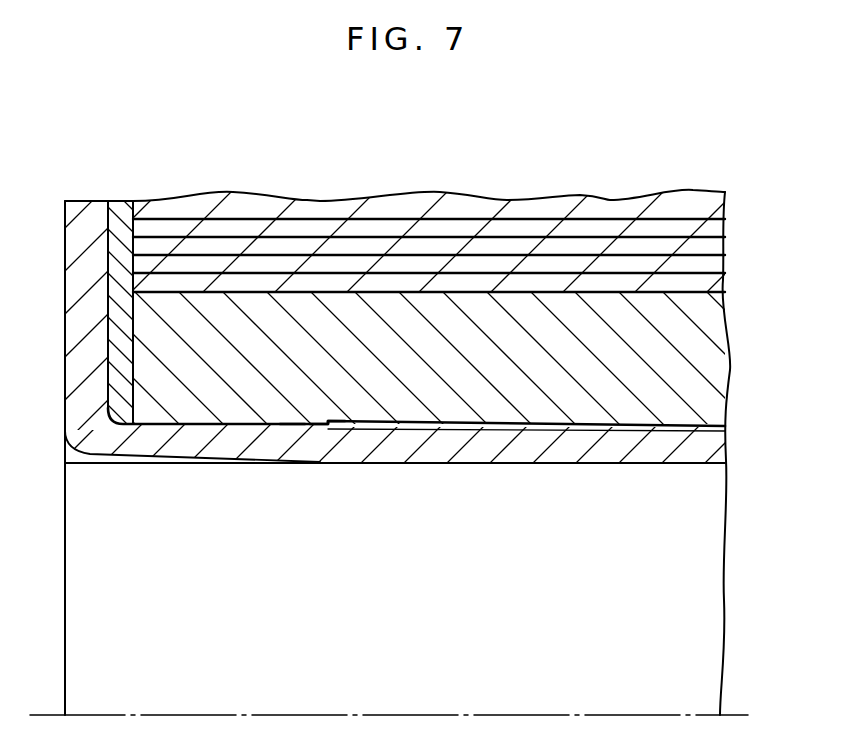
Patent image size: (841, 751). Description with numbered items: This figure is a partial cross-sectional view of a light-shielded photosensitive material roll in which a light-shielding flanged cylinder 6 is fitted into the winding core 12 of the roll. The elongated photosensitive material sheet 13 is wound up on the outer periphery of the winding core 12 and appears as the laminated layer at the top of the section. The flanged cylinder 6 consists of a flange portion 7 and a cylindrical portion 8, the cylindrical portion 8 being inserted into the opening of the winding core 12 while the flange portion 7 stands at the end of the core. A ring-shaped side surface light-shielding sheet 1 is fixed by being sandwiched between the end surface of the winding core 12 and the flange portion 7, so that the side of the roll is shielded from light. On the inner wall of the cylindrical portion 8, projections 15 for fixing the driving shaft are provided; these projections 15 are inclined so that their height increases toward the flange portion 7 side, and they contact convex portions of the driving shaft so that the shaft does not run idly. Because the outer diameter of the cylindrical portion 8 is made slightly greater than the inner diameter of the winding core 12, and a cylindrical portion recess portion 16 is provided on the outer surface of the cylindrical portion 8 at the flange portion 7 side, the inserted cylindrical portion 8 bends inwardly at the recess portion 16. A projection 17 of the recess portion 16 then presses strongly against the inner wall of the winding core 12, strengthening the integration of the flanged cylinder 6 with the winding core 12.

The ring-shaped side surface light-shielding sheet 1 is at (123, 213).
The light-shielding flanged cylinder 6 is at (55, 327).
The flange portion 7 is at (101, 214).
The cylindrical portion 8 is at (715, 452).
The winding core 12 is at (700, 343).
The photosensitive material sheet 13 is at (543, 211).
The projection for fixing the driving shaft 15 is at (78, 456).
The cylindrical portion recess portion 16 is at (293, 423).
The projection of the cylindrical portion recess portion 17 is at (328, 422).